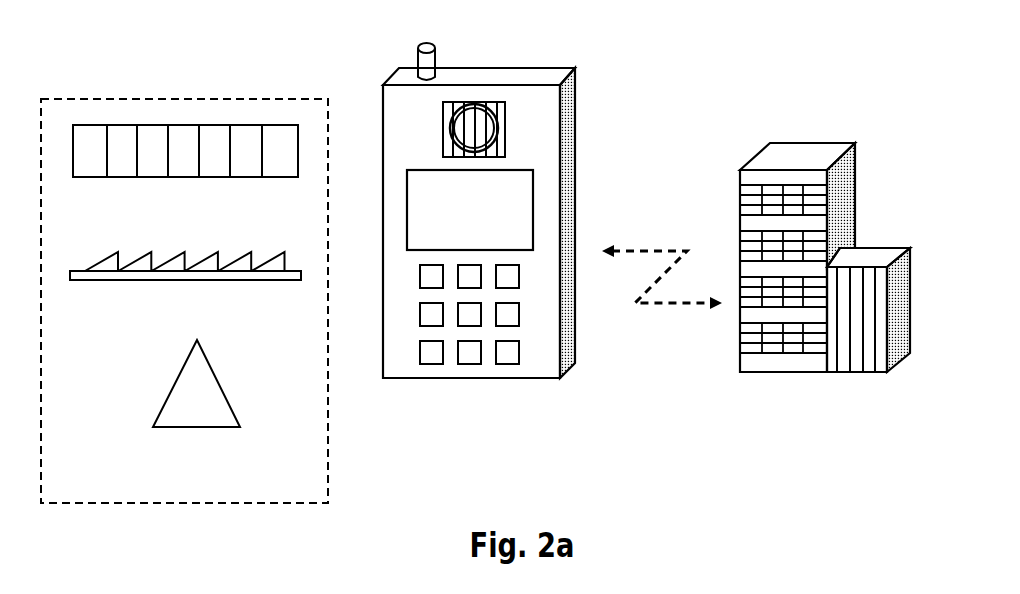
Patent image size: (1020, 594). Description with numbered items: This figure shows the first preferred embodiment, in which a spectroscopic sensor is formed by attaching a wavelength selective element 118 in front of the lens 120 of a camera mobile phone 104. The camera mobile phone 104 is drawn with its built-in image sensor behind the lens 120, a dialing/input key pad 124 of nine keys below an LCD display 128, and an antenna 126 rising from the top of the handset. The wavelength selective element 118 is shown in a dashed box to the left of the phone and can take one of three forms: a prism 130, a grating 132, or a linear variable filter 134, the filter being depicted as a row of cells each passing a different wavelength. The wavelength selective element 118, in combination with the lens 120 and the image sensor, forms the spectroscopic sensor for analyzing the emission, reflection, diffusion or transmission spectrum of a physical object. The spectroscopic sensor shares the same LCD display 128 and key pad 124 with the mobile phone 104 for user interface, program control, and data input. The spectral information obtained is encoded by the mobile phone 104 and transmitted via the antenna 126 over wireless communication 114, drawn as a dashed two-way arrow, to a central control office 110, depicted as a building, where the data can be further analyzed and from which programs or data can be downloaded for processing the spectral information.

The mobile communication device 104 is at (577, 325).
The central control office 110 is at (803, 142).
The wireless communication 114 is at (662, 250).
The wavelength selective element 118 is at (442, 128).
The lens 120 is at (502, 128).
The dialing/input key pad 124 is at (470, 363).
The antenna 126 is at (437, 58).
The LCD display 128 is at (470, 210).
The prism 130 is at (193, 427).
The grating 132 is at (225, 280).
The linear variable filter 134 is at (215, 178).